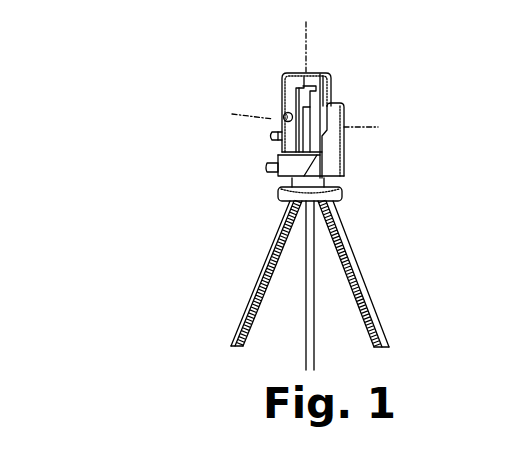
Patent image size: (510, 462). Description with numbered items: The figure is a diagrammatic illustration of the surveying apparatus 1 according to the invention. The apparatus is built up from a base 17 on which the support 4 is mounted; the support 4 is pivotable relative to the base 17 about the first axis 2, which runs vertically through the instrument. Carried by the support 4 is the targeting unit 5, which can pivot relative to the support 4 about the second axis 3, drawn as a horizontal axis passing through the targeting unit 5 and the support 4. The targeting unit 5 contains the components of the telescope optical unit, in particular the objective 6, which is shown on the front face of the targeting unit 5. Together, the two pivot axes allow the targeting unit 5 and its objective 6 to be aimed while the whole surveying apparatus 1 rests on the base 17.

The surveying apparatus 1 is at (122, 78).
The first axis 2 is at (309, 38).
The second axis 3 is at (380, 128).
The support 4 is at (346, 173).
The targeting unit 5 is at (280, 100).
The objective 6 is at (277, 128).
The base 17 is at (287, 196).